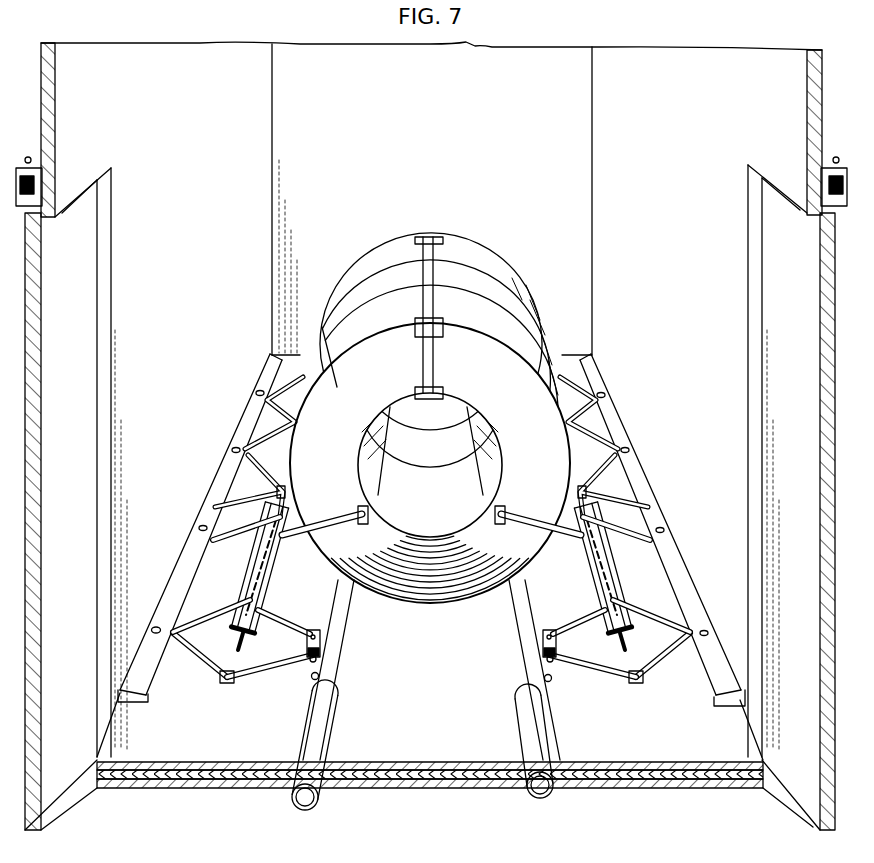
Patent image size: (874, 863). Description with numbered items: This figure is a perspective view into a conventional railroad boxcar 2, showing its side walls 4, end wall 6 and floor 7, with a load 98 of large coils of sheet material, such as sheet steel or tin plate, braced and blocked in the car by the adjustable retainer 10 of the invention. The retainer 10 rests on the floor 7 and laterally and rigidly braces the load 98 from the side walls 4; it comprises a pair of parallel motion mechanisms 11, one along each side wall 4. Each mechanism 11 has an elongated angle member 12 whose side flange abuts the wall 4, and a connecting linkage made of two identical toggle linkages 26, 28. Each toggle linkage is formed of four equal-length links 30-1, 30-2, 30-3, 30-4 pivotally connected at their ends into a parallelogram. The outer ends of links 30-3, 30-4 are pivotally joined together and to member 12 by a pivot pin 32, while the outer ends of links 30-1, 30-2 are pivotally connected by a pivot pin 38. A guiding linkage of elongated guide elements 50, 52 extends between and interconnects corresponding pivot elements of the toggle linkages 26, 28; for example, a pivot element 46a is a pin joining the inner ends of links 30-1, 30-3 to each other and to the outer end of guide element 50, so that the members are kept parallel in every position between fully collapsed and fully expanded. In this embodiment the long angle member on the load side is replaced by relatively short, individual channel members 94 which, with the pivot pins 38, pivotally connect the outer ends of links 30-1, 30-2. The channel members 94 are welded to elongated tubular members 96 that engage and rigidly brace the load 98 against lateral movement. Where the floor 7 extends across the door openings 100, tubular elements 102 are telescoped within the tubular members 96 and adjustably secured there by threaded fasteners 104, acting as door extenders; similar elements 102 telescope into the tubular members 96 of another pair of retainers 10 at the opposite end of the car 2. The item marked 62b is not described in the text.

The railroad boxcar 2 is at (671, 33).
The side wall 4 is at (192, 175).
The end wall 6 is at (452, 102).
The floor 7 is at (434, 742).
The adjustable retainer assembly 10 is at (256, 500).
The parallel motion mechanism 11 is at (273, 428).
The elongated angle member 12 is at (141, 703).
The toggle linkage 26 is at (218, 647).
The toggle linkage 28 is at (251, 548).
The link 30-1 is at (262, 668).
The link 30-2 is at (303, 611).
The link 30-3 is at (198, 662).
The link 30-4 is at (215, 610).
The pivot pin 32 is at (154, 626).
The pivot pin 38 is at (321, 641).
The pivot element 46a is at (225, 683).
The elongated guide element 50 is at (228, 684).
The elongated guide element 52 is at (255, 591).
The slide member 62b is at (262, 531).
The channel member 94 is at (310, 661).
The elongated tubular member 96 is at (343, 664).
The load 98 is at (497, 384).
The door opening 100 is at (106, 279).
The tubular element 102 is at (330, 735).
The threaded fastener 104 is at (313, 680).